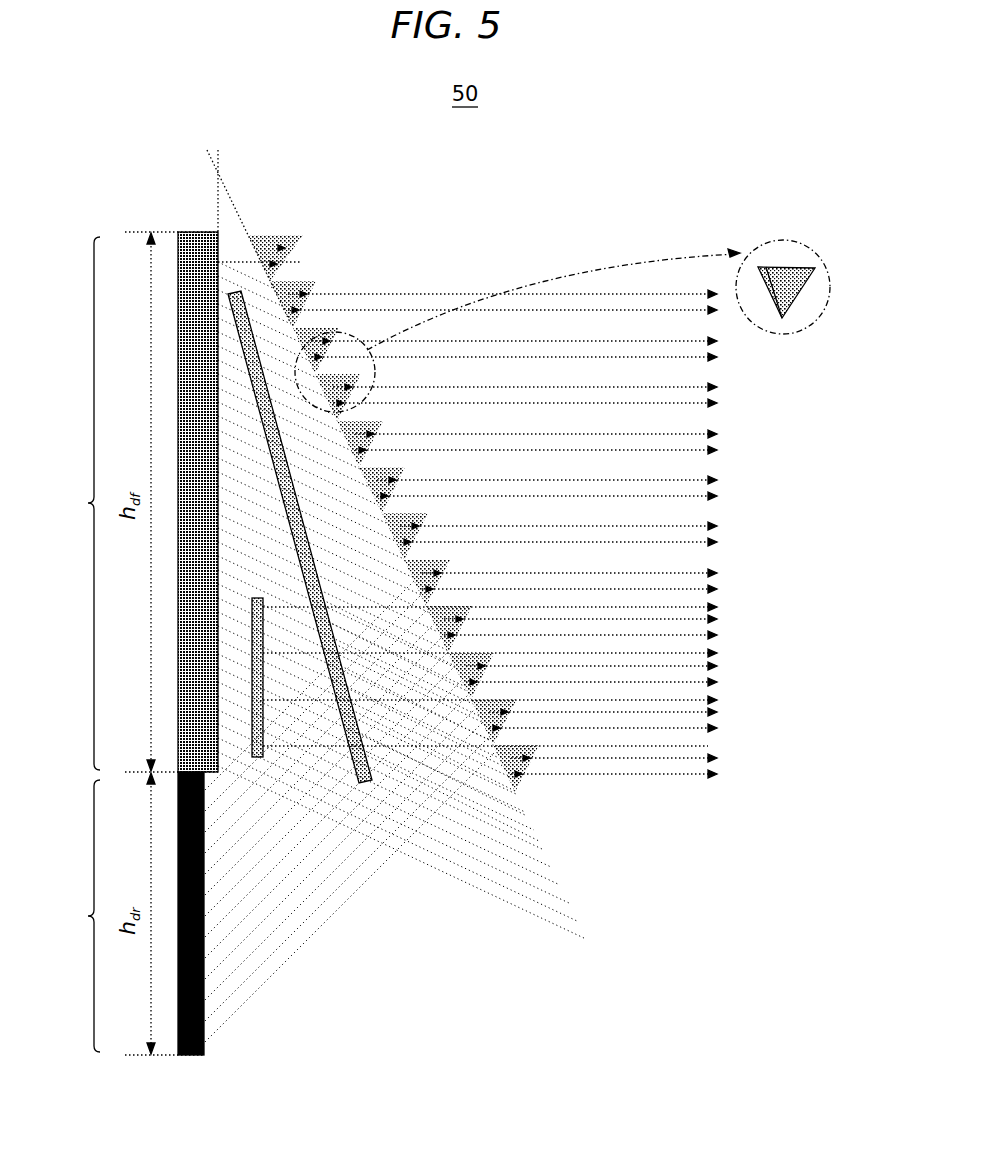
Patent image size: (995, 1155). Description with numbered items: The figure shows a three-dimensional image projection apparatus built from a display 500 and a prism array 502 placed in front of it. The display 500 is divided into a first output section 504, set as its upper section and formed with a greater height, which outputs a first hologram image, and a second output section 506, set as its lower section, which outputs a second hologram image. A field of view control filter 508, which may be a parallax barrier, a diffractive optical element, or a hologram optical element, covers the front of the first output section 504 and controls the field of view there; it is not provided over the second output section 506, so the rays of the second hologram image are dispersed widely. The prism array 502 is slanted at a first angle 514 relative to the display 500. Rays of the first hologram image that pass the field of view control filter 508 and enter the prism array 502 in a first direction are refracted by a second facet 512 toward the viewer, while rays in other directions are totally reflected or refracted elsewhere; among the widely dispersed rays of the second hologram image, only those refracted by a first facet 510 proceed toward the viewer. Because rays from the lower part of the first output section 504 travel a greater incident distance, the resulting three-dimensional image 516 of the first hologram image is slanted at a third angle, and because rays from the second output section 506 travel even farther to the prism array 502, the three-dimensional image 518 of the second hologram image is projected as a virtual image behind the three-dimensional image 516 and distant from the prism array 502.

The display 500 is at (192, 1062).
The prism array 502 is at (515, 793).
The first output section 504 is at (66, 503).
The second output section 506 is at (66, 916).
The field of view control filter 508 is at (212, 548).
The first facet 510 is at (792, 264).
The second facet 512 is at (808, 291).
The first angle 514 is at (235, 152).
The 3D image corresponding to the first hologram image 516 is at (372, 785).
The 3D image corresponding to the second hologram image 518 is at (255, 720).